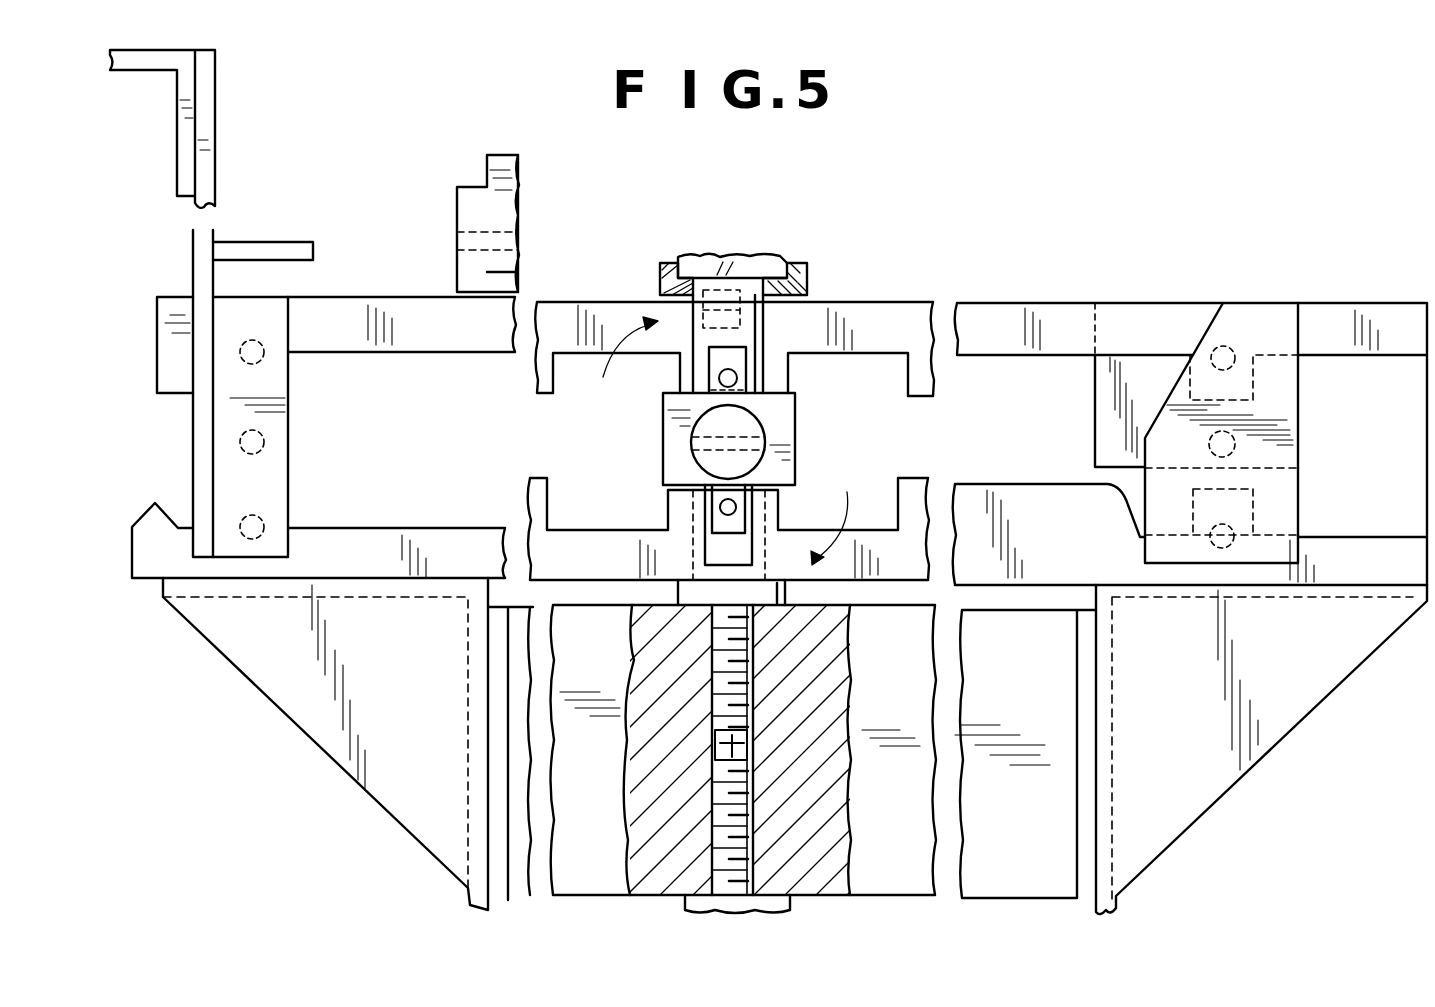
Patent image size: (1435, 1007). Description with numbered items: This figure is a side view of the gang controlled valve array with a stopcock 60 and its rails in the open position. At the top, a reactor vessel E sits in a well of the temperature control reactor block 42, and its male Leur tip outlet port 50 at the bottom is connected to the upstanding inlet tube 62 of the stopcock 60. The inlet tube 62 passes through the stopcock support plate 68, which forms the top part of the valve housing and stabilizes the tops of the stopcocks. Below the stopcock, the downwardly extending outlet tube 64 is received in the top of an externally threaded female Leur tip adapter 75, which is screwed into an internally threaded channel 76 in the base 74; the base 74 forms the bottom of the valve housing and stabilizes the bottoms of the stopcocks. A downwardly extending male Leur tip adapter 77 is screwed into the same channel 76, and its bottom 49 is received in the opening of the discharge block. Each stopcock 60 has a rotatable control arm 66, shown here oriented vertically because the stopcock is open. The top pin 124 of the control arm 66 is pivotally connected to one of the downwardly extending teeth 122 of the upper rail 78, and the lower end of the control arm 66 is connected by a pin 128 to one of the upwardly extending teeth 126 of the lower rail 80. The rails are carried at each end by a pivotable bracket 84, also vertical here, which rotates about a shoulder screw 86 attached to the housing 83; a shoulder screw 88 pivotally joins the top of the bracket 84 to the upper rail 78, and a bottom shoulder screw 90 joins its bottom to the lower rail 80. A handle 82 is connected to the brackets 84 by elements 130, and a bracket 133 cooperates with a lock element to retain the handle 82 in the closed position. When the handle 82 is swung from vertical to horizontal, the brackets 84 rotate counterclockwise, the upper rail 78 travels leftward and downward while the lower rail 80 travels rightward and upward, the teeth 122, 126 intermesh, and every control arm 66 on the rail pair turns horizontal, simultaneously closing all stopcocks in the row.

The temperature control reactor block 42 is at (498, 165).
The bottom of male Leur tip adapter 49 is at (687, 908).
The outlet port 50 is at (690, 313).
The stopcock 60 is at (663, 455).
The inlet tube 62 is at (748, 328).
The outlet tube 64 is at (720, 553).
The control arm 66 is at (730, 358).
The stopcock support plate 68 is at (807, 285).
The base 74 is at (990, 688).
The female Leur tip adapter 75 is at (753, 673).
The channel 76 is at (708, 743).
The male Leur tip adapter 77 is at (740, 768).
The upper rail 78 is at (1402, 320).
The lower rail 80 is at (1365, 586).
The handle 82 is at (142, 73).
The housing 83 is at (295, 693).
The pivotable bracket 84 is at (273, 317).
The shoulder screw 86 is at (264, 442).
The shoulder screw 88 is at (262, 360).
The bottom shoulder screw 90 is at (264, 522).
The teeth 122 is at (538, 374).
The top pin 124 is at (740, 378).
The teeth 126 is at (532, 490).
The pin 128 is at (720, 535).
The elements 130 is at (195, 267).
The bracket 133 is at (310, 240).
The reactor vessel E is at (740, 262).